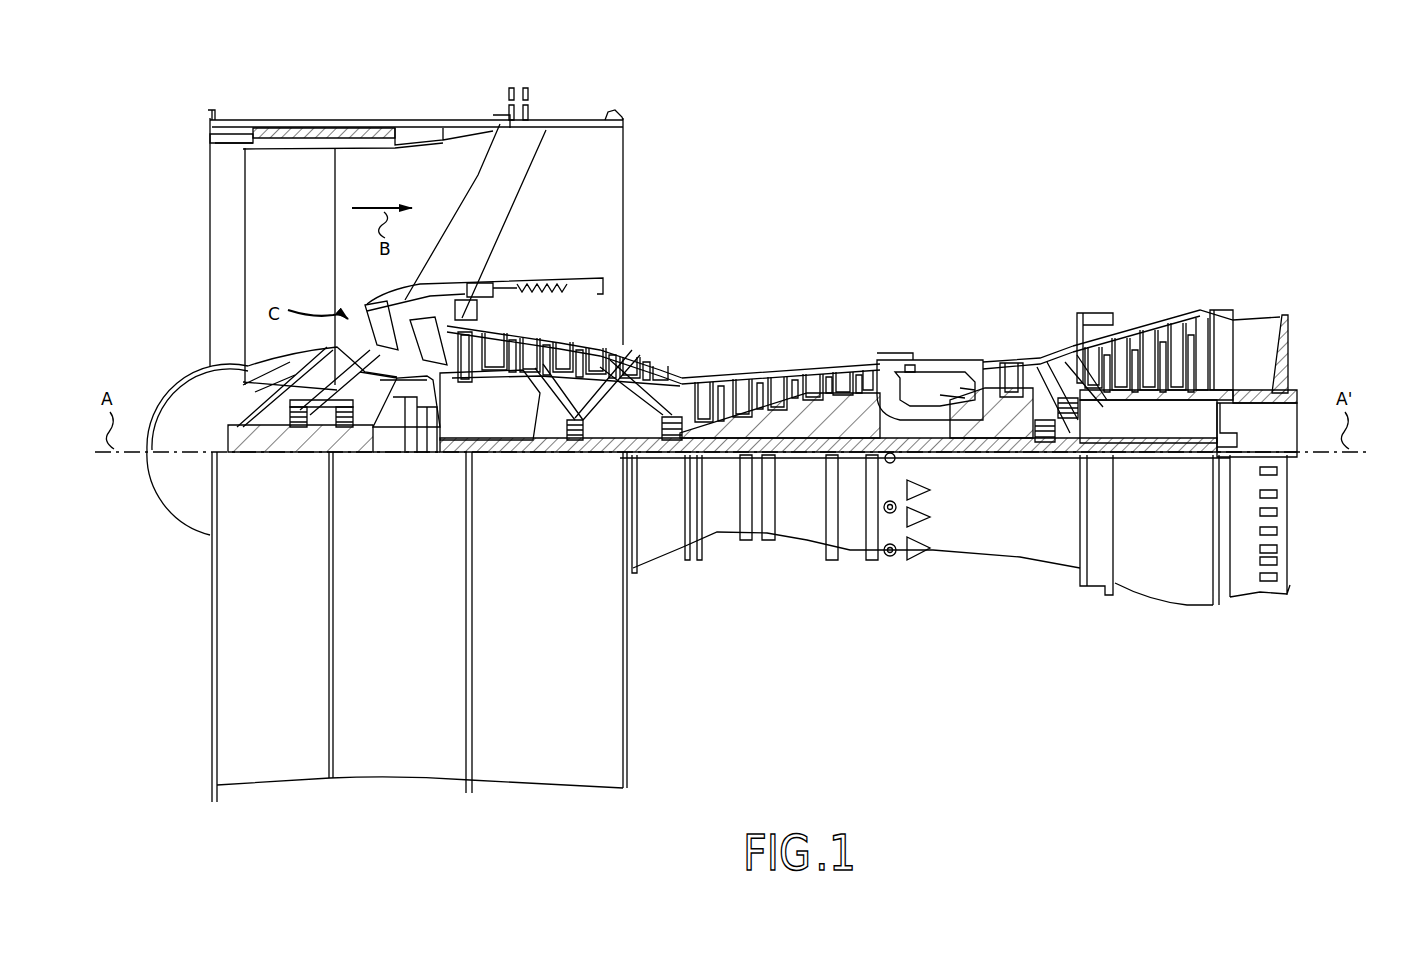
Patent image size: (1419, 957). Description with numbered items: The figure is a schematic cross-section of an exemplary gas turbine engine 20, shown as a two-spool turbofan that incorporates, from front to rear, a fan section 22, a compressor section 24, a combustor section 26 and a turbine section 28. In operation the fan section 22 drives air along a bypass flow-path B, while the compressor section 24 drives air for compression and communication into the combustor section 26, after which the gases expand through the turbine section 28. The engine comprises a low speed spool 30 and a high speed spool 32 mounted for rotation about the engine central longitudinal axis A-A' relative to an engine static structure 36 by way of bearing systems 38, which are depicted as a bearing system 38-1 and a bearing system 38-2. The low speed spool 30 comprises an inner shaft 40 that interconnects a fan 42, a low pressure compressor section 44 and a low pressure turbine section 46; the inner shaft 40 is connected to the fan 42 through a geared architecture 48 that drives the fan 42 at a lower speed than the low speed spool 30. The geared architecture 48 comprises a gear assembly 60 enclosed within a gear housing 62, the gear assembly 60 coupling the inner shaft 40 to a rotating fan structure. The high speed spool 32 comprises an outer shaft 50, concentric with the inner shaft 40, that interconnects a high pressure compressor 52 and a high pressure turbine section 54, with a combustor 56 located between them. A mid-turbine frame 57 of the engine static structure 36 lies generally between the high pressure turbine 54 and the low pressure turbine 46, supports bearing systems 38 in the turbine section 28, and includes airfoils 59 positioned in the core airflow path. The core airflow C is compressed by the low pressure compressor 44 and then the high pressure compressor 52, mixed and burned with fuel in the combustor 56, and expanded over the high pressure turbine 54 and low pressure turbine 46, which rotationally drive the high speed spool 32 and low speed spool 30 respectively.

The gas turbine engine 20 is at (995, 160).
The fan section 22 is at (461, 96).
The compressor section 24 is at (473, 241).
The combustor section 26 is at (990, 241).
The turbine section 28 is at (1220, 241).
The low speed spool 30 is at (806, 488).
The high speed spool 32 is at (847, 420).
The engine static structure 36 is at (201, 783).
The bearing system 38 is at (1048, 455).
The bearing system 38-1 is at (303, 430).
The bearing system 38-2 is at (575, 435).
The inner shaft 40 is at (647, 455).
The fan 42 is at (297, 256).
The low pressure compressor section 44 is at (553, 343).
The low pressure turbine section 46 is at (1148, 333).
The geared architecture 48 is at (432, 475).
The outer shaft 50 is at (919, 438).
The high pressure compressor 52 is at (803, 382).
The high pressure turbine section 54 is at (1010, 370).
The combustor 56 is at (935, 388).
The mid-turbine frame 57 is at (1060, 376).
The airfoils 59 is at (1066, 370).
The gear assembly 60 is at (430, 430).
The gear housing 62 is at (435, 390).